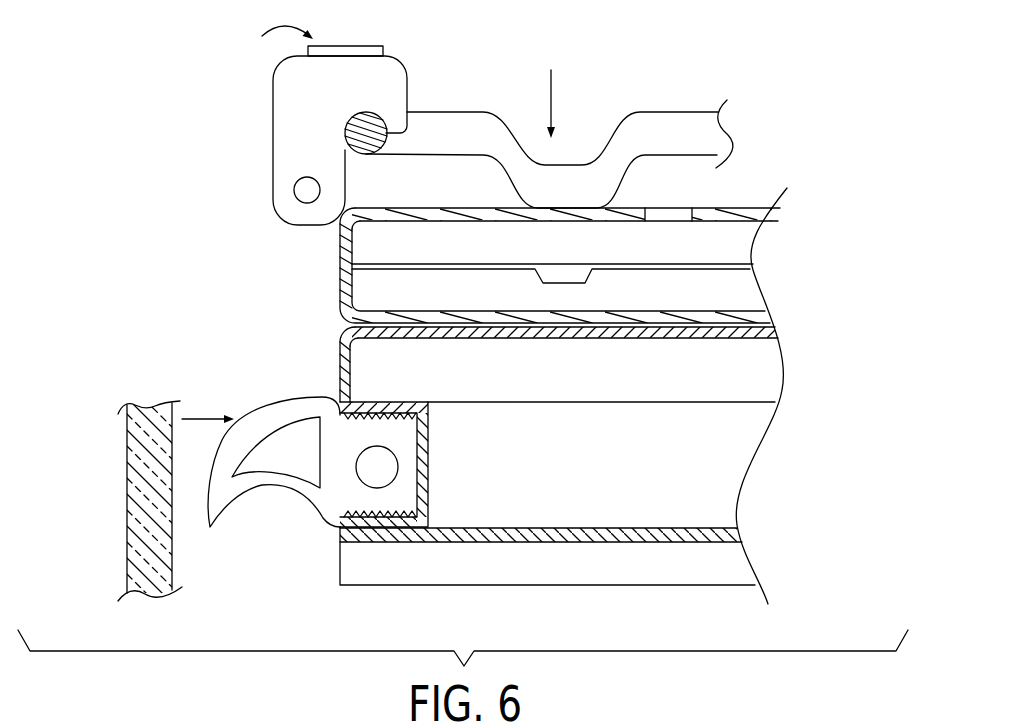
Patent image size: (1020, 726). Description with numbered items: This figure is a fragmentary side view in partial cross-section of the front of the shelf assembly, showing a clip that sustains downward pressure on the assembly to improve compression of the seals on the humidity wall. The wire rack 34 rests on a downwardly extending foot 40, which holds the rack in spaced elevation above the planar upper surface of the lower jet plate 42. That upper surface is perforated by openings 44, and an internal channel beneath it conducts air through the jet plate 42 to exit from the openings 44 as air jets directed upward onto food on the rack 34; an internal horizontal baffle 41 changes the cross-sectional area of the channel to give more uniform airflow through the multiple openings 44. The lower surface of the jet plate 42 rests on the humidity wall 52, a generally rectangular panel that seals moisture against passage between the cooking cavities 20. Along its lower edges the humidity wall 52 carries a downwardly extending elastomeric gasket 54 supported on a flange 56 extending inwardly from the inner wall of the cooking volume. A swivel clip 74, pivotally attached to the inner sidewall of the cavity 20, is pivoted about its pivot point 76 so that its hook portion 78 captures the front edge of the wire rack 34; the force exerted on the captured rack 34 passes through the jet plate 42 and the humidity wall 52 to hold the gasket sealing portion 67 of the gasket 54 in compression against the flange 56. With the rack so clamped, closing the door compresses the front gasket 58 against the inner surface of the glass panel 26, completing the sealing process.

The cooking cavity 20 is at (510, 57).
The glass panel 26 is at (172, 520).
The wire rack 34 is at (672, 123).
The foot 40 is at (555, 180).
The internal horizontal baffle 41 is at (670, 265).
The lower jet plate 42 is at (340, 263).
The openings 44 is at (683, 211).
The humidity wall 52 is at (340, 380).
The elastomeric gasket 54 is at (618, 508).
The flange 56 is at (441, 533).
The front gasket 58 is at (268, 485).
The gasket sealing portion 67 is at (238, 505).
The swivel clip 74 is at (288, 136).
The pivot point 76 is at (307, 190).
The hook portion 78 is at (384, 104).